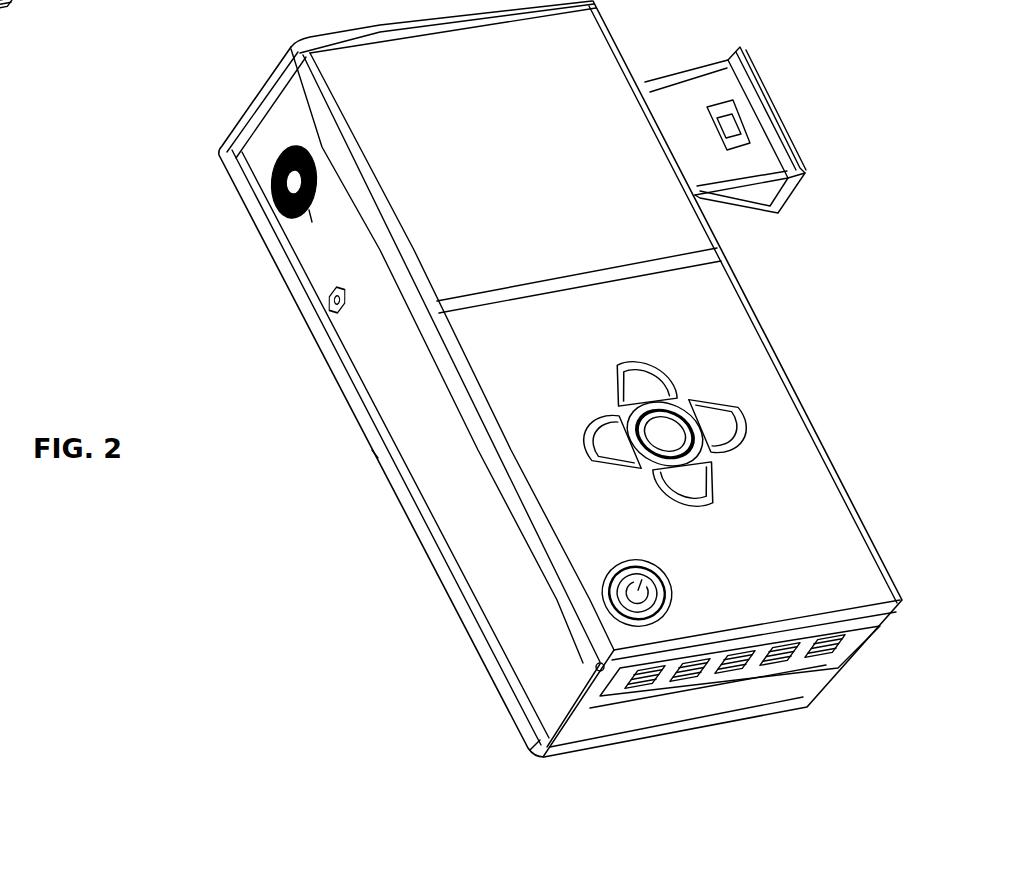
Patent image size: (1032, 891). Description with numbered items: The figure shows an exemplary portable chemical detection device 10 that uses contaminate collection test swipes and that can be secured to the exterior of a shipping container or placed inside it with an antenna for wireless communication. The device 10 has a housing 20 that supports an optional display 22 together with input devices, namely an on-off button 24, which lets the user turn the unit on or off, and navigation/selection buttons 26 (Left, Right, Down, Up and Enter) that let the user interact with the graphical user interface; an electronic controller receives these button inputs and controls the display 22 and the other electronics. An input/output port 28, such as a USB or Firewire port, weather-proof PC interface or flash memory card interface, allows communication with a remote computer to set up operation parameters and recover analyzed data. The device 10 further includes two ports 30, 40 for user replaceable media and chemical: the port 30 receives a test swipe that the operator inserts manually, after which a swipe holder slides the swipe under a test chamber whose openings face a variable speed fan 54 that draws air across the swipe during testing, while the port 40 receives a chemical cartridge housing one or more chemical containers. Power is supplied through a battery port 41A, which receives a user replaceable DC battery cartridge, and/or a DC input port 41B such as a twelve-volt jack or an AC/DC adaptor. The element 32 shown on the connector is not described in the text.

The portable chemical detection device 10 is at (296, 503).
The housing 20 is at (420, 397).
The display 22 is at (484, 163).
The on-off button 24 is at (633, 562).
The navigation/selection buttons 26 is at (677, 400).
The input/output port 28 is at (727, 255).
The port 30 is at (740, 47).
The connector housing 32 is at (716, 127).
The port 40 is at (840, 673).
The battery port 41A is at (753, 715).
The DC input port 41B is at (337, 286).
The variable speed fan 54 is at (280, 199).